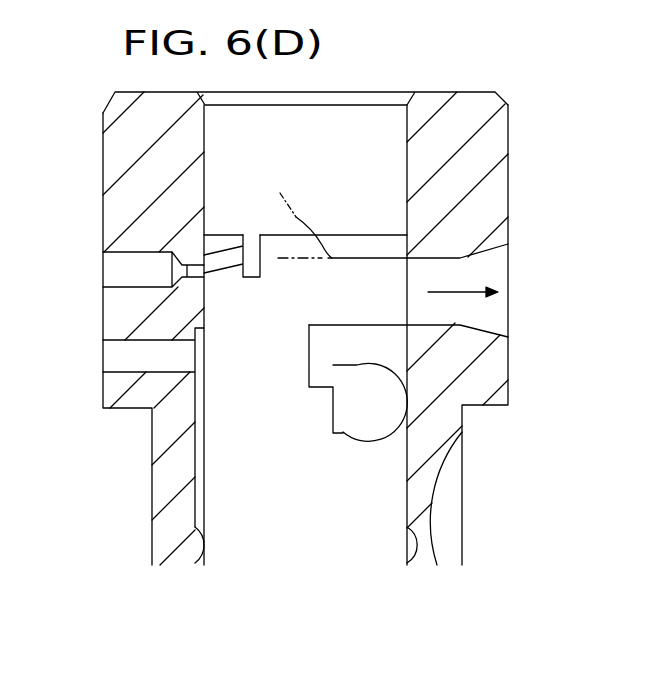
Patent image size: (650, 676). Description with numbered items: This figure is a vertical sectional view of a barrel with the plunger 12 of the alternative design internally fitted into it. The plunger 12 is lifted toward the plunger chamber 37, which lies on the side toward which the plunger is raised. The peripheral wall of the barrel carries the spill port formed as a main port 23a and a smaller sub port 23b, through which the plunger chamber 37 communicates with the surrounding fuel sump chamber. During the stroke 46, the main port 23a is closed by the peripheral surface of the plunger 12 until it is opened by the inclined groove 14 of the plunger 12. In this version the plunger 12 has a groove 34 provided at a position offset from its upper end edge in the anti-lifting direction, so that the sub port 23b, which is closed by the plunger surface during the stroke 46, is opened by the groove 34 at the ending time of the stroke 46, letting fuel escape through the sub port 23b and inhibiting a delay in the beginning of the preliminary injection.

The plunger 12 is at (278, 247).
The inclined groove 14 is at (397, 348).
The main port 23a is at (420, 279).
The sub port 23b is at (110, 268).
The groove 34 is at (224, 260).
The plunger chamber 37 is at (372, 113).
The stroke 46 is at (368, 258).